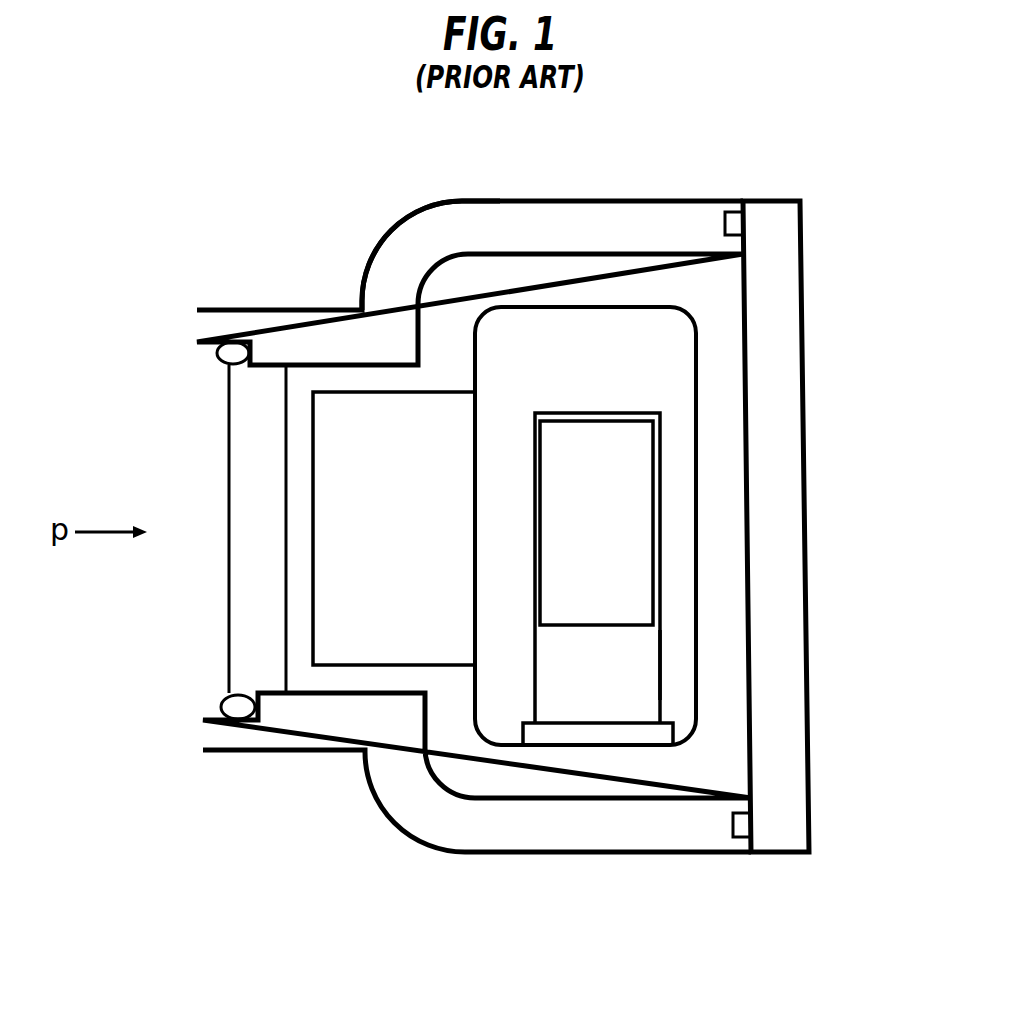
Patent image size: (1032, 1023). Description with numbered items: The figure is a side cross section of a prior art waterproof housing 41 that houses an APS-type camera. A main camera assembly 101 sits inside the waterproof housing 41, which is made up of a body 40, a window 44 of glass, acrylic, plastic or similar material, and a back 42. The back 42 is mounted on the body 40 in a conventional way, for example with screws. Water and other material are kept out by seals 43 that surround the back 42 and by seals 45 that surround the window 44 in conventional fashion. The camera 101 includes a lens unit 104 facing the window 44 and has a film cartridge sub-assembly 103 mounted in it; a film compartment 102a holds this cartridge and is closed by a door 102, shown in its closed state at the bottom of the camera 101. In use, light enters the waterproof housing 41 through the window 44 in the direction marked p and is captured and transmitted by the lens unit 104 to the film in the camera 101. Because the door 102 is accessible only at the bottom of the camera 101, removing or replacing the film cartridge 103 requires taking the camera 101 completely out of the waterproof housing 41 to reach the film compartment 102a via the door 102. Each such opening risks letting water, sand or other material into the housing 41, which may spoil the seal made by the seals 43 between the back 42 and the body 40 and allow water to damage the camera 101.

The body 40 is at (607, 222).
The waterproof housing 41 is at (483, 192).
The back 42 is at (778, 252).
The seals 43 is at (731, 214).
The window 44 is at (237, 427).
The seals 45 is at (228, 352).
The main camera assembly 101 is at (678, 355).
The door 102 is at (650, 733).
The film compartment 102a is at (646, 662).
The film cartridge sub-assembly 103 is at (630, 488).
The lens unit 104 is at (343, 635).